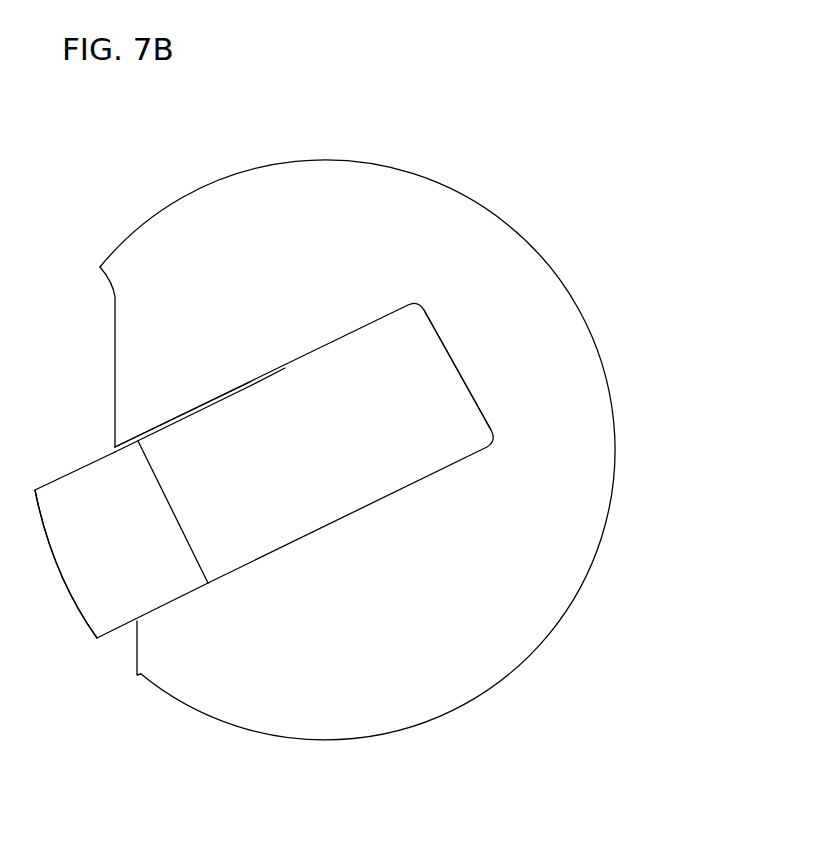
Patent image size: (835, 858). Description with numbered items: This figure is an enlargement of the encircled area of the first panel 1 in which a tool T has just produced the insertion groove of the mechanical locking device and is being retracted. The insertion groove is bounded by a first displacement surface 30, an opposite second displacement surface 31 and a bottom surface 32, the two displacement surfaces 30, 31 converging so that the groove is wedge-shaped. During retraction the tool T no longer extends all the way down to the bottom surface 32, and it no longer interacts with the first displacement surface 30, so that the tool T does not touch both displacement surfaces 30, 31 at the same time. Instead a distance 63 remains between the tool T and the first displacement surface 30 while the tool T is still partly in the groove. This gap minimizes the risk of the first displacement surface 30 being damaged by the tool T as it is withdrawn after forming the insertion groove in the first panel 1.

The first panel 1 is at (485, 550).
The first displacement surface 30 is at (332, 341).
The second displacement surface 31 is at (305, 542).
The bottom surface 32 is at (462, 368).
The distance 63 is at (194, 390).
The tool T is at (125, 538).